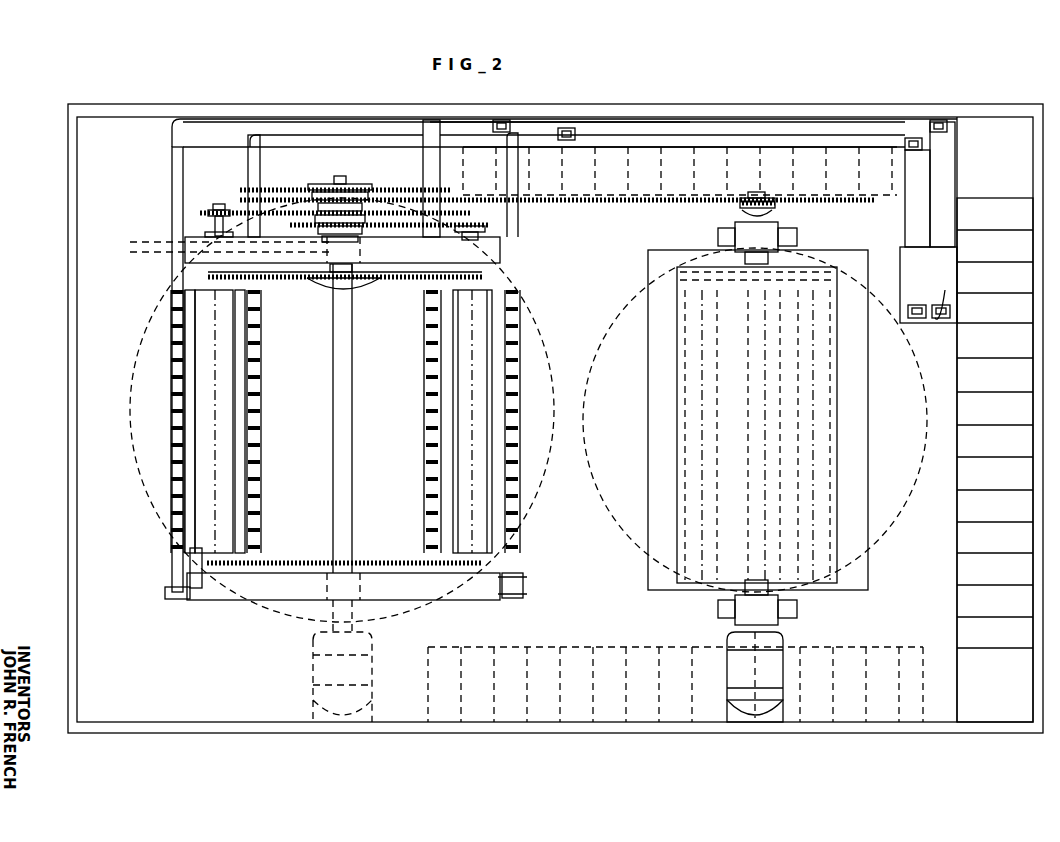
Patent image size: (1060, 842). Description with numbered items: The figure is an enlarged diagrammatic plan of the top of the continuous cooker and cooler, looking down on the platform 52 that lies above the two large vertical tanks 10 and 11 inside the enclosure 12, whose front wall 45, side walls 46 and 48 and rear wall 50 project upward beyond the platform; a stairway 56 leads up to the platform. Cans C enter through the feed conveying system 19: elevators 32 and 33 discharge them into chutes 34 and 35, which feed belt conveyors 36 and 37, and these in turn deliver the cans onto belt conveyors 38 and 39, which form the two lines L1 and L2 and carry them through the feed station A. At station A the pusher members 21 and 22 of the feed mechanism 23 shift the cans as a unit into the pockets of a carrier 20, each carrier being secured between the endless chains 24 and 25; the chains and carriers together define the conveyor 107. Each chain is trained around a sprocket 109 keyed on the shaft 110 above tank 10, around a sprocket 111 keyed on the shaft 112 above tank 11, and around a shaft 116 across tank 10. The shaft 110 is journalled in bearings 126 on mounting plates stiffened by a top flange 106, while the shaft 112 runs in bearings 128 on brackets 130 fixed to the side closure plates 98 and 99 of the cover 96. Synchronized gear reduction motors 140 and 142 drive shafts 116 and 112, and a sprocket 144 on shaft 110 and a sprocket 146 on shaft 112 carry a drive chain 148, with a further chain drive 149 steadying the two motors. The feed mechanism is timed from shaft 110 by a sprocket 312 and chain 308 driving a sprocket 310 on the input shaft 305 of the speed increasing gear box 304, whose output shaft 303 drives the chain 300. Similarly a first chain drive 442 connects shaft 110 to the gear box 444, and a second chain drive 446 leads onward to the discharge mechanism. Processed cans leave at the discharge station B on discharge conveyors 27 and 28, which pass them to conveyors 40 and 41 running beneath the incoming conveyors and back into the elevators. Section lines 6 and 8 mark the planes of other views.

The cylindrical tank 10 is at (280, 620).
The cylindrical tank 11 is at (635, 550).
The enclosure 12 is at (865, 105).
The feed conveying system 19 is at (962, 118).
The carrier 20 is at (440, 396).
The pusher member 21 is at (423, 350).
The pusher member 22 is at (518, 332).
The feed mechanism 23 is at (420, 516).
The endless chain 24 is at (400, 284).
The endless chain 25 is at (395, 562).
The discharge conveyor 27 is at (250, 175).
The discharge conveyor 28 is at (172, 177).
The elevator 32 is at (905, 270).
The elevator 33 is at (945, 290).
The chute 34 is at (935, 195).
The chute 35 is at (948, 185).
The endless belt conveyor 36 is at (810, 145).
The endless belt conveyor 37 is at (722, 147).
The endless belt conveyor 38 is at (512, 178).
The endless belt conveyor 39 is at (402, 198).
The endless belt conveyor 40 is at (318, 133).
The endless belt conveyor 41 is at (225, 132).
The front wall 45 is at (1033, 465).
The side wall 46 is at (688, 120).
The side wall 48 is at (600, 725).
The rear wall 50 is at (77, 380).
The platform 52 is at (620, 246).
The stairway 56 is at (770, 132).
The cover 96 is at (680, 396).
The side closure plate 98 is at (676, 278).
The side closure plate 99 is at (855, 572).
The top flange 106 is at (263, 253).
The conveyor 107 is at (200, 548).
The sprocket 109 is at (322, 288).
The shaft 110 is at (338, 178).
The sprocket 111 is at (820, 258).
The shaft 112 is at (700, 405).
The shaft 116 is at (333, 608).
The bearing 126 is at (320, 256).
The bearing 128 is at (757, 232).
The bracket 130 is at (795, 238).
The gear reduction motor 140 is at (313, 662).
The gear reduction motor 142 is at (757, 718).
The sprocket 144 is at (390, 212).
The sprocket 146 is at (745, 214).
The drive chain 148 is at (780, 208).
The chain drive 149 is at (272, 188).
The chain 300 is at (490, 265).
The output shaft 303 is at (490, 252).
The speed increasing gear box 304 is at (490, 240).
The input shaft 305 is at (492, 208).
The chain 308 is at (440, 240).
The sprocket 310 is at (488, 222).
The sprocket 312 is at (345, 262).
The first chain drive 442 is at (232, 212).
The speed increasing gear box 444 is at (185, 242).
The second chain drive 446 is at (185, 253).
The section line 6 is at (393, 257).
The section line 8 is at (110, 222).
The feed station A is at (440, 382).
The discharge station B is at (205, 525).
The cans C is at (503, 120).
The line of cans L1 is at (512, 312).
The line of cans L2 is at (428, 322).